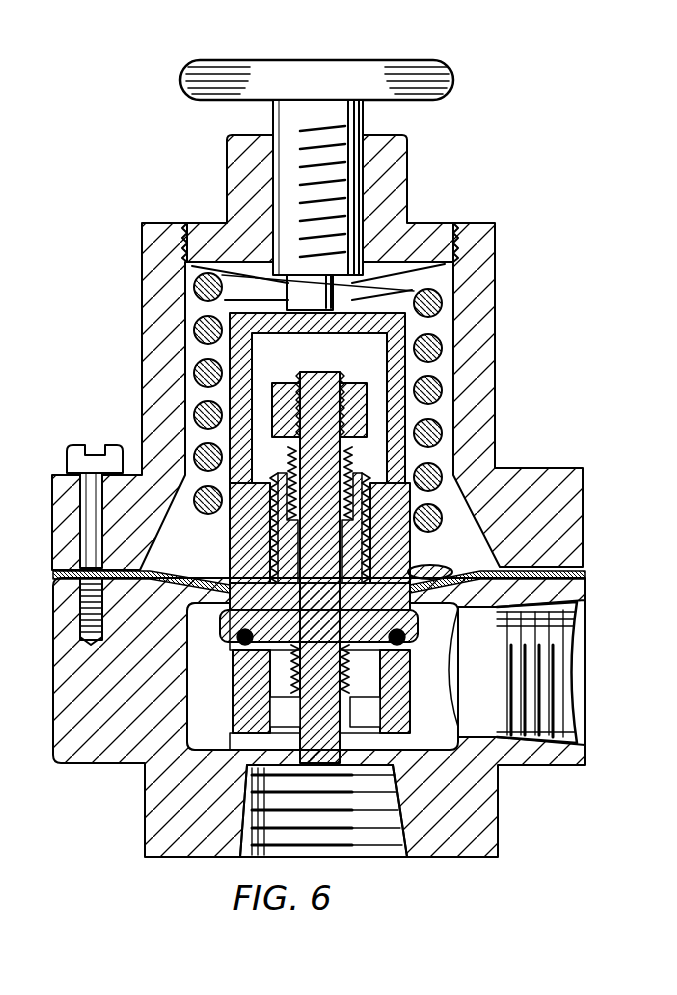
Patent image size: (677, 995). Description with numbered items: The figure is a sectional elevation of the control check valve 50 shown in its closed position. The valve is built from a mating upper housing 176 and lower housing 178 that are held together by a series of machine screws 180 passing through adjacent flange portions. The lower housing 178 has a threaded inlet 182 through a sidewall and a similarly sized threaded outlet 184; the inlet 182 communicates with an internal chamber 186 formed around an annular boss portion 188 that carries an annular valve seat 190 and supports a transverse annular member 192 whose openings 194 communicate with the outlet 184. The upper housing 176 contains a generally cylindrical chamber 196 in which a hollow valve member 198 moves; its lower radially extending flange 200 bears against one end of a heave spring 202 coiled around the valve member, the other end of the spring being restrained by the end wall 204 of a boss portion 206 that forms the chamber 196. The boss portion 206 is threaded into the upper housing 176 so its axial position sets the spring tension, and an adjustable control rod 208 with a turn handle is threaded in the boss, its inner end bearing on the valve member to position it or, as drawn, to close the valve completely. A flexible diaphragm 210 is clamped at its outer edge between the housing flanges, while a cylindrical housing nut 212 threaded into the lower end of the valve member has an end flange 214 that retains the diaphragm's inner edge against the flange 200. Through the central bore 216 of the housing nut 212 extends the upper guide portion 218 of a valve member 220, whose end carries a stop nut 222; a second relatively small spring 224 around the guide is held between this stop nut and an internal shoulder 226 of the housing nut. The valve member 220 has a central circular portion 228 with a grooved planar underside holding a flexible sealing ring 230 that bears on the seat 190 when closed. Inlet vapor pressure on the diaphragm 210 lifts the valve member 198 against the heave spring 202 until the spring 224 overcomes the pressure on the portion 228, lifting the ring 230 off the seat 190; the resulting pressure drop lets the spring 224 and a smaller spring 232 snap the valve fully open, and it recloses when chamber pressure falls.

The control check valve 50 is at (318, 540).
The upper housing 176 is at (483, 372).
The lower housing 178 is at (478, 802).
The machine screws 180 is at (110, 443).
The inlet 182 is at (545, 618).
The outlet 184 is at (390, 830).
The internal chamber 186 is at (482, 697).
The annular boss portion 188 is at (385, 697).
The annular valve seat 190 is at (237, 648).
The transverse annular member 192 is at (373, 737).
The openings 194 is at (267, 733).
The cylindrical chamber 196 is at (442, 330).
The hollow valve member 198 is at (443, 478).
The radially extending flange 200 is at (195, 581).
The heave spring 202 is at (200, 333).
The end wall 204 is at (373, 255).
The boss portion 206 is at (400, 192).
The adjustable control rod 208 is at (365, 112).
The flexible diaphragm 210 is at (187, 600).
The housing nut 212 is at (443, 518).
The end flange 214 is at (440, 603).
The central bore 216 is at (444, 570).
The upper guide portion 218 is at (330, 372).
The valve member 220 is at (288, 676).
The stop nut 222 is at (278, 385).
The second relatively small spring 224 is at (345, 472).
The internal shoulder 226 is at (263, 550).
The central circular portion 228 is at (322, 640).
The flexible sealing ring 230 is at (249, 627).
The smaller spring 232 is at (352, 672).